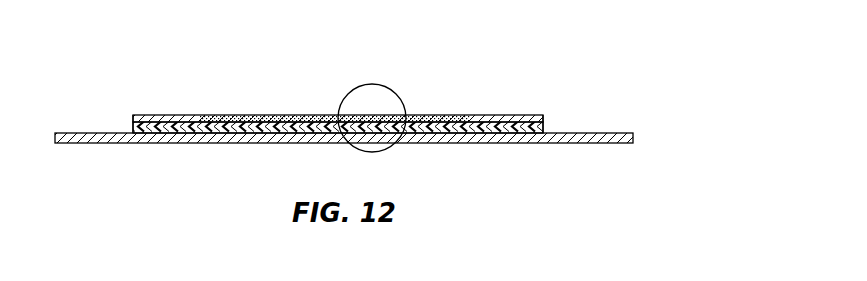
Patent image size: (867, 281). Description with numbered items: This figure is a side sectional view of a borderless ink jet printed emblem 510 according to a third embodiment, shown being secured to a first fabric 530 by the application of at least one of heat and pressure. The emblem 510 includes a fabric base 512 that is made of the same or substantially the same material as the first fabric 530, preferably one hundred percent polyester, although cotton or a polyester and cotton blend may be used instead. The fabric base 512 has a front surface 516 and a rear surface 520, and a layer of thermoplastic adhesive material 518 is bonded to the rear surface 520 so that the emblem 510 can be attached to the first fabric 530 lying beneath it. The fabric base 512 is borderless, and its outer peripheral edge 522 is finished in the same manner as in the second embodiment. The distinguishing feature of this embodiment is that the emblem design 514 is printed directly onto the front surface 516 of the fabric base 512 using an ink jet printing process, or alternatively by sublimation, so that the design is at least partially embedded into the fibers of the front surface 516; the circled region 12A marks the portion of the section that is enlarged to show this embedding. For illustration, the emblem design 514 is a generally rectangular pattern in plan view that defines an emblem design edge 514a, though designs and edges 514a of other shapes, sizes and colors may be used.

The printed emblem 510 is at (207, 58).
The emblem design edge 514a is at (208, 115).
The emblem design 514 is at (307, 115).
The detail view region 12A is at (355, 83).
The front surface 516 is at (483, 115).
The fabric base 512 is at (522, 117).
The outer peripheral edge 522 is at (543, 117).
The layer of thermoplastic adhesive material 518 is at (543, 132).
The rear surface 520 is at (505, 128).
The first fabric 530 is at (632, 143).